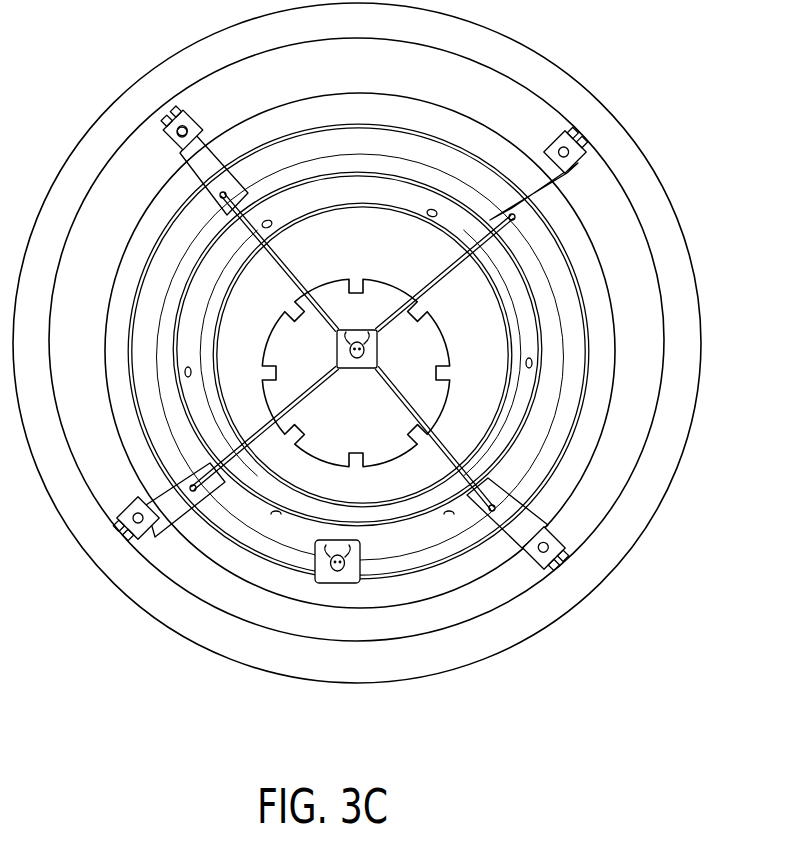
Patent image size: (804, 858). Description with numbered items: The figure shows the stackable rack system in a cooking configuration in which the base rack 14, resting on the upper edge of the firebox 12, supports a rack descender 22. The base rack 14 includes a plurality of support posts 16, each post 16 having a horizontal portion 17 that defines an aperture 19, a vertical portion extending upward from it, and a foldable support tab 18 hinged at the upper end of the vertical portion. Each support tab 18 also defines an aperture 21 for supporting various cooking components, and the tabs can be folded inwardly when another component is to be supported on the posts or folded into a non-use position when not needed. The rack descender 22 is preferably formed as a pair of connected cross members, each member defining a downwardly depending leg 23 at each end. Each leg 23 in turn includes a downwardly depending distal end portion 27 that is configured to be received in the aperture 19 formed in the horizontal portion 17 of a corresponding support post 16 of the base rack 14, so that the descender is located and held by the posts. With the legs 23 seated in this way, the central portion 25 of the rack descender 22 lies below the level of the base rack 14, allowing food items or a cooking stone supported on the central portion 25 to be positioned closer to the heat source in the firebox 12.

The firebox 12 is at (495, 388).
The base rack 14 is at (580, 262).
The support post 16 is at (584, 171).
The horizontal portion 17 is at (203, 160).
The support tab 18 is at (168, 141).
The aperture 19 is at (226, 191).
The aperture 21 is at (186, 128).
The rack descender 22 is at (310, 287).
The leg 23 is at (243, 221).
The central portion 25 is at (356, 330).
The distal end portion 27 is at (509, 213).